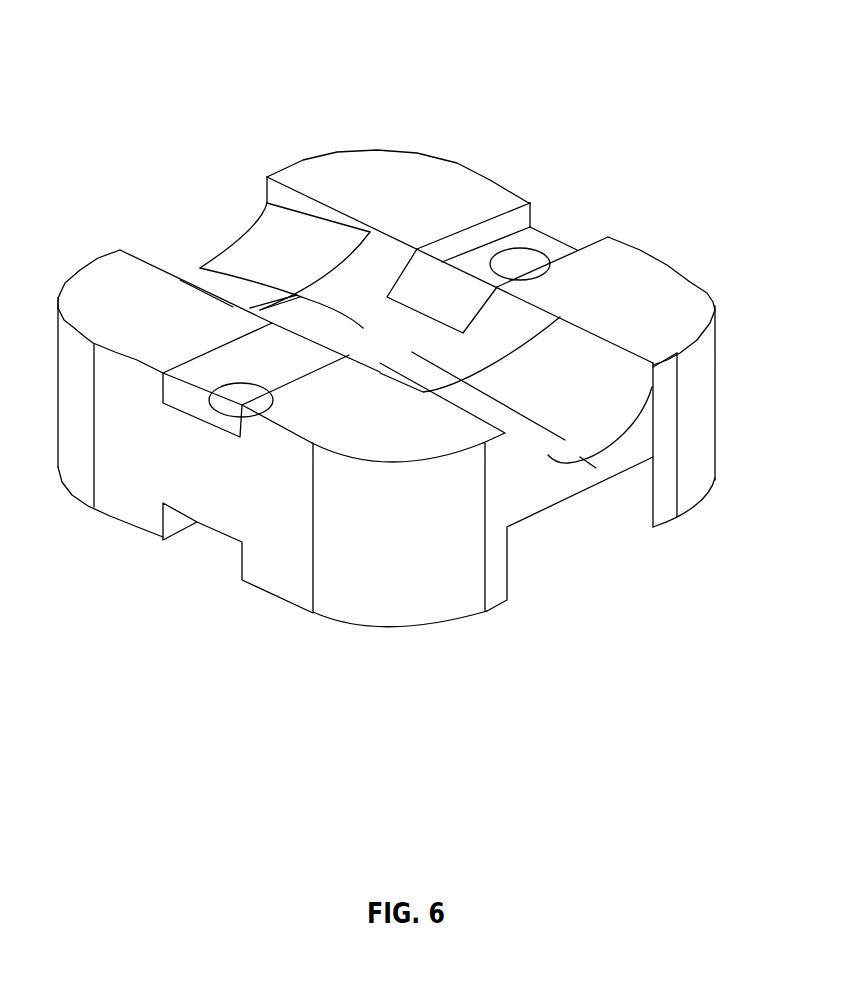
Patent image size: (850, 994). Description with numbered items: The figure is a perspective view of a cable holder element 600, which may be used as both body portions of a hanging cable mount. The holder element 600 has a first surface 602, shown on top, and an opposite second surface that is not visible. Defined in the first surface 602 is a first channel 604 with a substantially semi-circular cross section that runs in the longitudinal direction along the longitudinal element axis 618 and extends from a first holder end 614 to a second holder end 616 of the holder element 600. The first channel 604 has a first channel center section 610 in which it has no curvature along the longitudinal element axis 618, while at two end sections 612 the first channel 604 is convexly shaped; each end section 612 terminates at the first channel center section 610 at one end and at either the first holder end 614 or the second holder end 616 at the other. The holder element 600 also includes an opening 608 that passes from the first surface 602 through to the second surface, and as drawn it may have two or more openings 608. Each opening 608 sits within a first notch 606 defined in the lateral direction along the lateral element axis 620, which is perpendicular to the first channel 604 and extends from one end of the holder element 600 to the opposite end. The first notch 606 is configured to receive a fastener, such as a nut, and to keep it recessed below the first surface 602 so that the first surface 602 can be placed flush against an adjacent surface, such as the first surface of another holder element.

The holder element 600 is at (742, 114).
The first surface 602 is at (643, 299).
The first channel 604 is at (466, 350).
The first notch 606 is at (533, 240).
The opening 608 is at (518, 262).
The first channel center section 610 is at (404, 346).
The end sections 612 is at (530, 398).
The first holder end 614 is at (597, 468).
The second holder end 616 is at (199, 267).
The longitudinal element axis 618 is at (299, 643).
The lateral element axis 620 is at (498, 638).